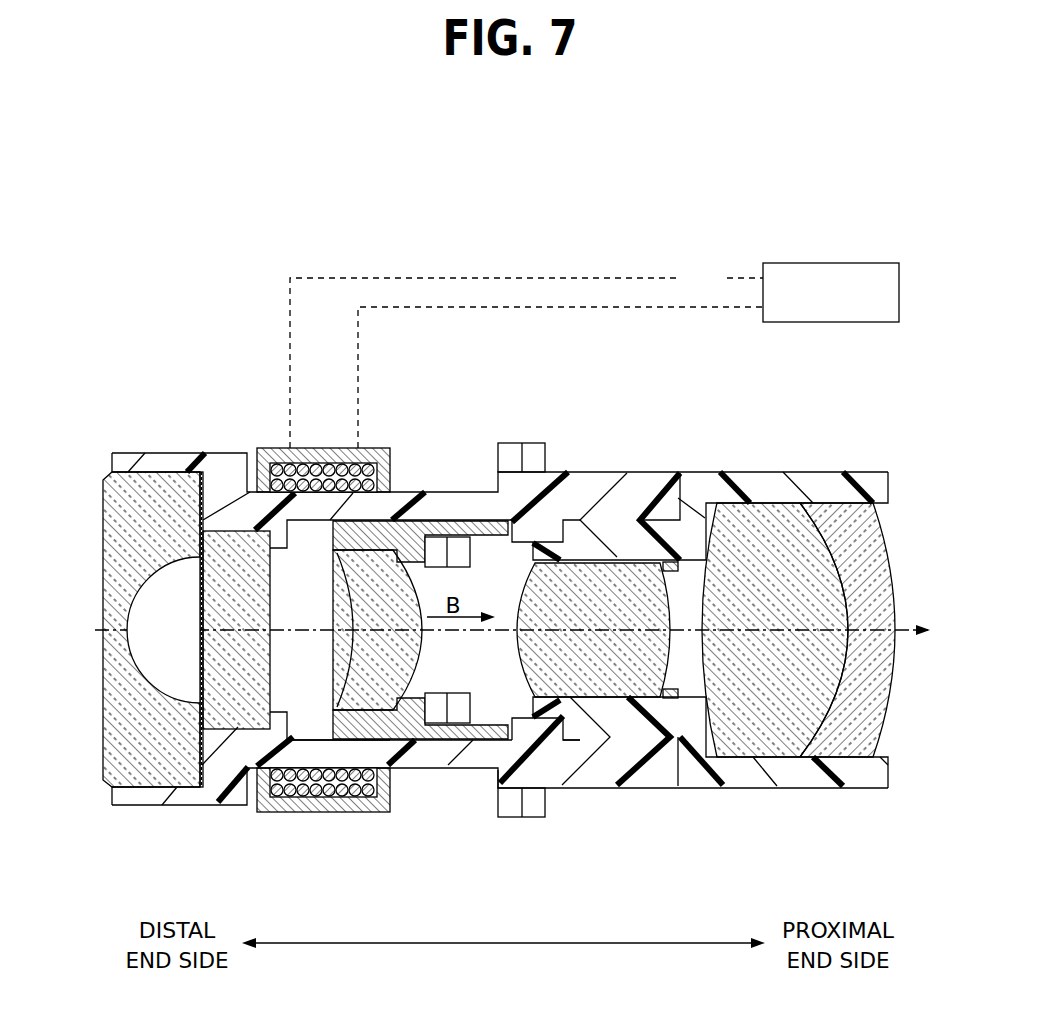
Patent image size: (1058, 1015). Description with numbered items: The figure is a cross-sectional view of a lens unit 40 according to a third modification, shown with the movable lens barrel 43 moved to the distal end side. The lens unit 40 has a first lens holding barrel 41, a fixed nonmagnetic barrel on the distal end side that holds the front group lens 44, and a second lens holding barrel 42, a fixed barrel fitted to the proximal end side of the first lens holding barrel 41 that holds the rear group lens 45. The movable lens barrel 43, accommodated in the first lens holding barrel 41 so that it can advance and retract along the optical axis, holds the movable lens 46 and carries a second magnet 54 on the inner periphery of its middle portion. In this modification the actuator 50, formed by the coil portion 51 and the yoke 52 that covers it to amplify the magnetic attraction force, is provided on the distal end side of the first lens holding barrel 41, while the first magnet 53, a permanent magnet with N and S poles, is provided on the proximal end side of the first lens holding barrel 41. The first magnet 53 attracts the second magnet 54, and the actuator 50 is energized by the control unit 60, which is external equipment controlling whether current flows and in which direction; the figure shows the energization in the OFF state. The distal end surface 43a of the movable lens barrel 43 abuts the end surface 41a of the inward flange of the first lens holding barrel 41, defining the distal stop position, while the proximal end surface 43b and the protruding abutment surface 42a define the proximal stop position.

The lens unit 40 is at (482, 395).
The first lens holding barrel 41 is at (183, 453).
The end surface 41a is at (290, 727).
The second lens holding barrel 42 is at (770, 472).
The abutment surface 42a is at (510, 726).
The movable lens barrel 43 is at (415, 490).
The distal end surface 43a is at (322, 737).
The proximal end surface 43b is at (525, 729).
The front group lens 44 is at (176, 672).
The rear group lens 45 is at (731, 672).
The movable lens 46 is at (412, 653).
The actuator 50 is at (278, 403).
The coil portion 51 is at (343, 448).
The yoke 52 is at (310, 448).
The first magnet 53 is at (515, 443).
The second magnet 54 is at (458, 520).
The control unit 60 is at (838, 263).